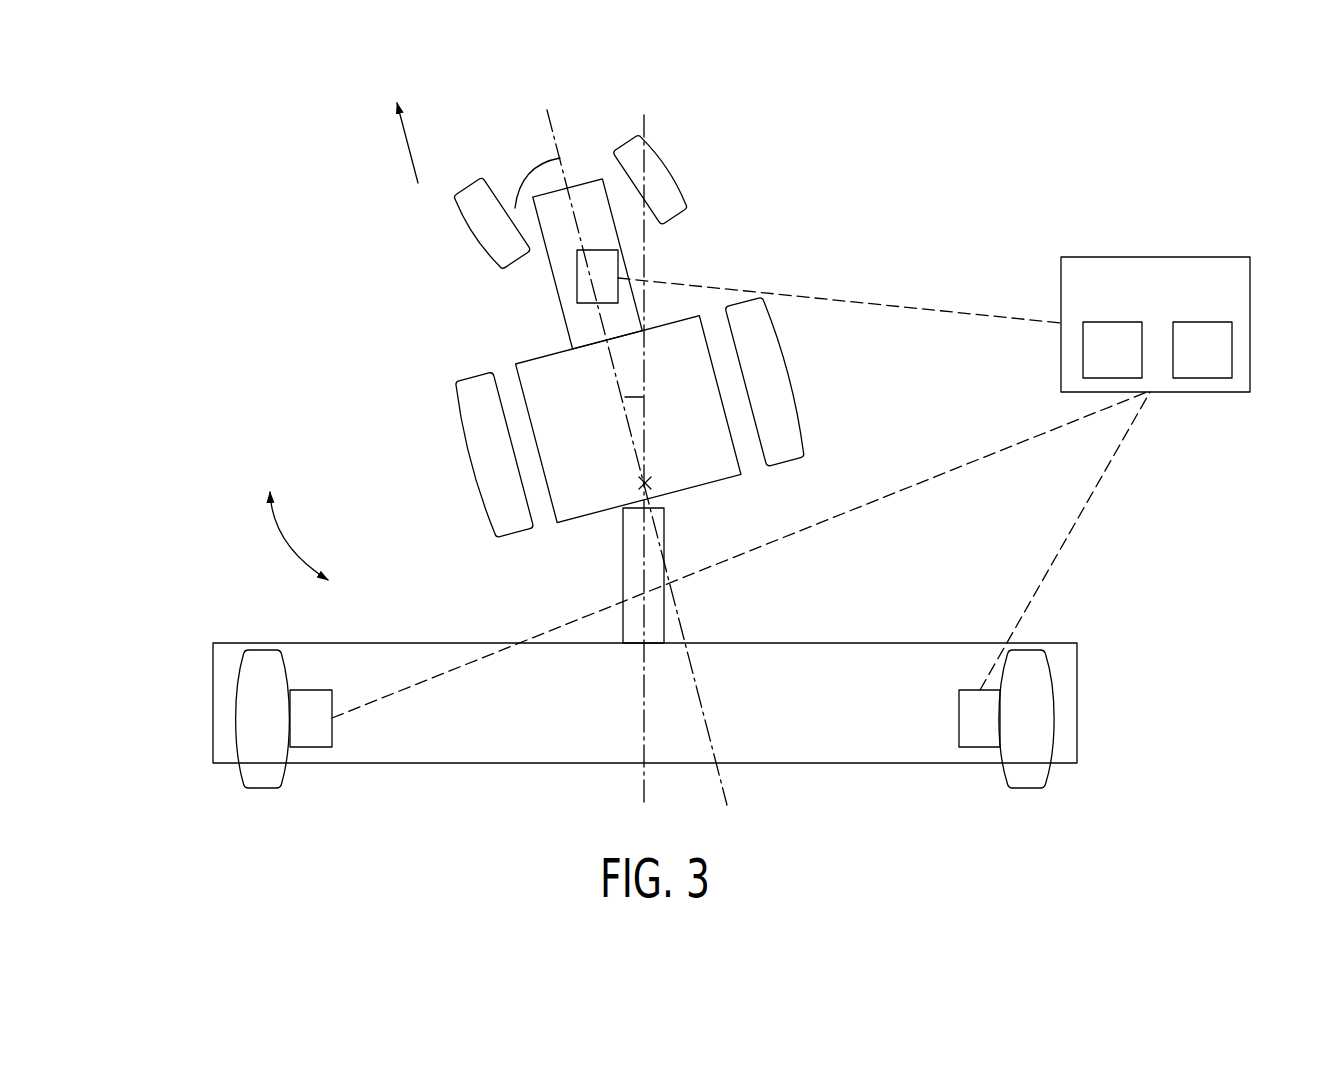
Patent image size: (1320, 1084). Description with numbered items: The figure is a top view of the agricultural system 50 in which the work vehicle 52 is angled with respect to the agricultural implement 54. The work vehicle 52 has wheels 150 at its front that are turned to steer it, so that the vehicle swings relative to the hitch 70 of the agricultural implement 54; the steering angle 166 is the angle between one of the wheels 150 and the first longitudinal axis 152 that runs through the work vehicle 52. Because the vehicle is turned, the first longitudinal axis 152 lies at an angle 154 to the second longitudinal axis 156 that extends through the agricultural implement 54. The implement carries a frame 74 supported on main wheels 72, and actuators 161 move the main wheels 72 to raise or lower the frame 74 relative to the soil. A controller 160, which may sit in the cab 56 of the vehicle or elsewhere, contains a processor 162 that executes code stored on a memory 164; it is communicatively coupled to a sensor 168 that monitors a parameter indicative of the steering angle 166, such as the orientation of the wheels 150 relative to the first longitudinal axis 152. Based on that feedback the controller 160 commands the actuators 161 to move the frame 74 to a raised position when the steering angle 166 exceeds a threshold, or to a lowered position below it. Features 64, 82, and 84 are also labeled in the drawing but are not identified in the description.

The agricultural system 50 is at (192, 250).
The work vehicle 52 is at (378, 422).
The agricultural implement 54 is at (188, 663).
The cab 56 is at (723, 467).
The direction of travel 64 is at (408, 150).
The hitch 70 is at (664, 523).
The main wheels 72 is at (212, 772).
The frame 74 is at (865, 763).
The steering direction 82 is at (275, 553).
The pivot point 84 is at (640, 483).
The wheels 150 is at (442, 224).
The first longitudinal axis 152 is at (682, 607).
The angle 154 is at (623, 396).
The second longitudinal axis 156 is at (645, 570).
The controller 160 is at (1155, 257).
The actuators 161 is at (308, 747).
The processor 162 is at (1083, 350).
The memory 164 is at (1232, 350).
The steering angle 166 is at (530, 180).
The sensor 168 is at (573, 277).